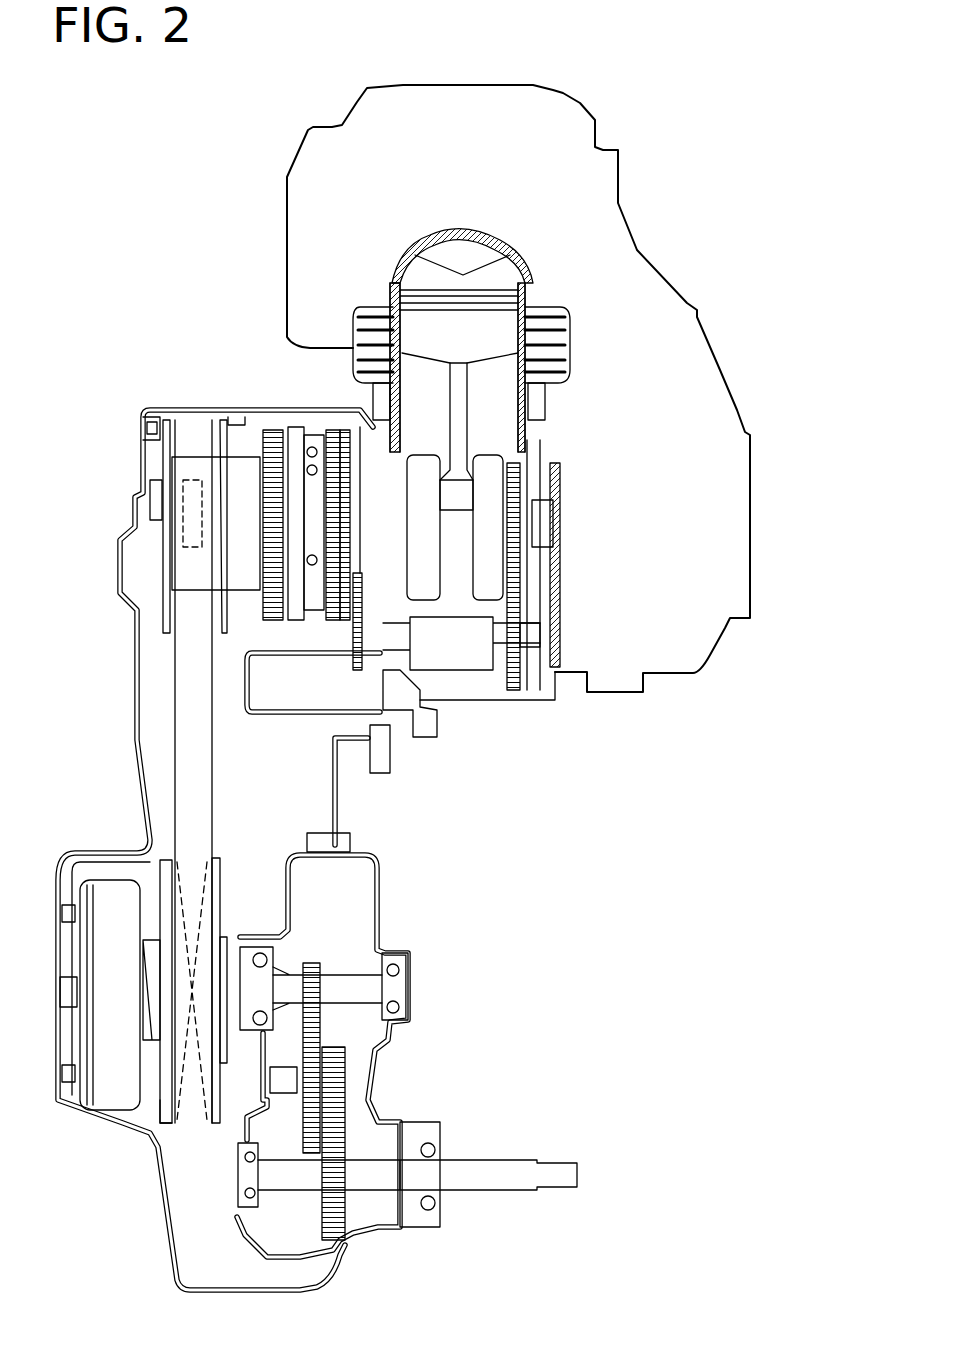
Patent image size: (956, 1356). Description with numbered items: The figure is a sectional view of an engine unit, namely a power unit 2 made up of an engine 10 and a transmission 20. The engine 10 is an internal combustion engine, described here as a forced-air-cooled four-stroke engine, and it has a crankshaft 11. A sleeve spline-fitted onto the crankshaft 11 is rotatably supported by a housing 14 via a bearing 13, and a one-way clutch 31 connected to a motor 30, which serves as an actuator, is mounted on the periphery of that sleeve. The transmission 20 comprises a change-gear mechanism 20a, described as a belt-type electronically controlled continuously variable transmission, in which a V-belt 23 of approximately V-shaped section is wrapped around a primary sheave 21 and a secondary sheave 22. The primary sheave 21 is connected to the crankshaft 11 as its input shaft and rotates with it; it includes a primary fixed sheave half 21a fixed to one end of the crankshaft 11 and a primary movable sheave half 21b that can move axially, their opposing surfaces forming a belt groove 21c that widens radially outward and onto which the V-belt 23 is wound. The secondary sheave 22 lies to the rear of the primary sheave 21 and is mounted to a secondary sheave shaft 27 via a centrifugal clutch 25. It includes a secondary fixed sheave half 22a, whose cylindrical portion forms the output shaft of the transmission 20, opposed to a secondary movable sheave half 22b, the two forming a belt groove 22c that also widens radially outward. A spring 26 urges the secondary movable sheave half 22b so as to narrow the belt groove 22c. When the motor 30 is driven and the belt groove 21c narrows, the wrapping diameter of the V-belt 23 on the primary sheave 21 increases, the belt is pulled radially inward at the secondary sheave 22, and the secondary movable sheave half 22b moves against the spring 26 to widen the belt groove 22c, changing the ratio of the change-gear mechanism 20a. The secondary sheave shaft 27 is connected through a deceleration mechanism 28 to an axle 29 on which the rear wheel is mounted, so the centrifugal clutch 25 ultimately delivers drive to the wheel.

The power unit 2 is at (591, 89).
The engine 10 is at (553, 727).
The crankshaft 11 is at (502, 523).
The bearing 13 is at (384, 456).
The housing 14 is at (298, 425).
The transmission 20 is at (153, 574).
The change-gear mechanism 20a is at (164, 710).
The primary sheave 21 is at (153, 439).
The primary fixed sheave half 21a is at (158, 490).
The primary movable sheave half 21b is at (238, 428).
The belt groove 21c is at (178, 428).
The secondary sheave 22 is at (161, 1178).
The secondary fixed sheave half 22a is at (323, 1160).
The secondary movable sheave half 22b is at (164, 1109).
The belt groove 22c is at (208, 843).
The V-belt 23 is at (204, 808).
The centrifugal clutch 25 is at (90, 964).
The spring 26 is at (144, 990).
The secondary sheave shaft 27 is at (386, 990).
The deceleration mechanism 28 is at (322, 1022).
The axle 29 is at (481, 1167).
The motor 30 is at (427, 734).
The one-way clutch 31 is at (340, 445).